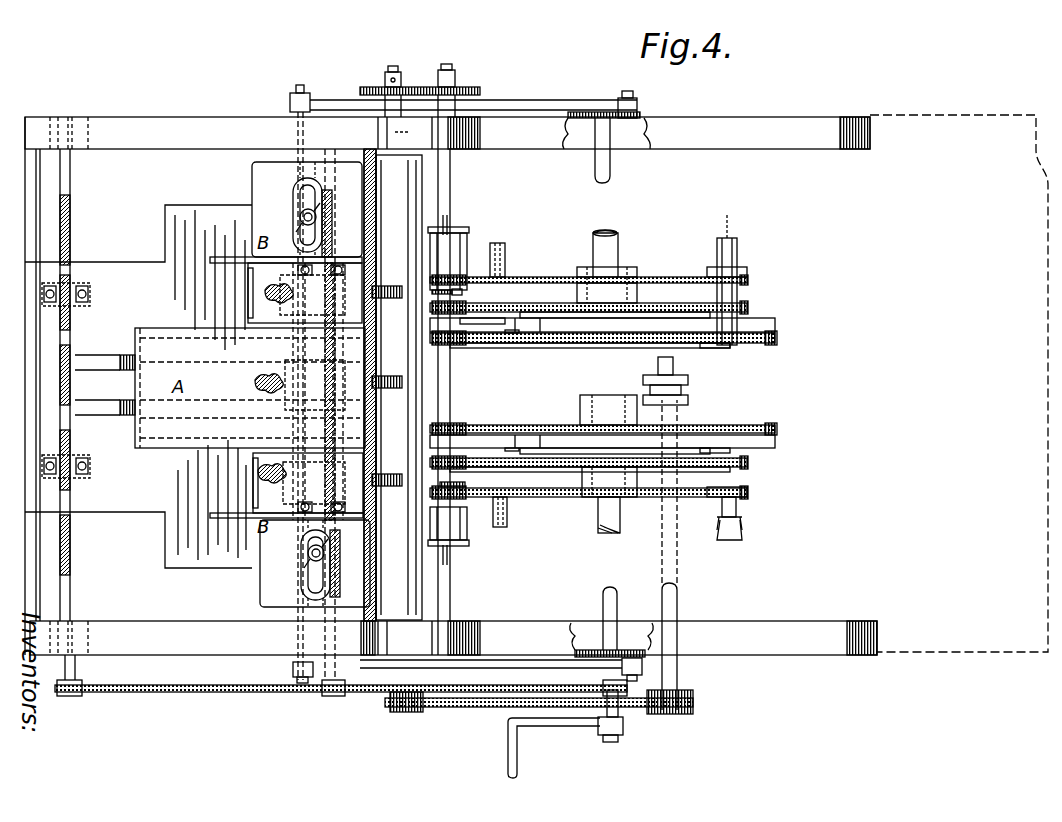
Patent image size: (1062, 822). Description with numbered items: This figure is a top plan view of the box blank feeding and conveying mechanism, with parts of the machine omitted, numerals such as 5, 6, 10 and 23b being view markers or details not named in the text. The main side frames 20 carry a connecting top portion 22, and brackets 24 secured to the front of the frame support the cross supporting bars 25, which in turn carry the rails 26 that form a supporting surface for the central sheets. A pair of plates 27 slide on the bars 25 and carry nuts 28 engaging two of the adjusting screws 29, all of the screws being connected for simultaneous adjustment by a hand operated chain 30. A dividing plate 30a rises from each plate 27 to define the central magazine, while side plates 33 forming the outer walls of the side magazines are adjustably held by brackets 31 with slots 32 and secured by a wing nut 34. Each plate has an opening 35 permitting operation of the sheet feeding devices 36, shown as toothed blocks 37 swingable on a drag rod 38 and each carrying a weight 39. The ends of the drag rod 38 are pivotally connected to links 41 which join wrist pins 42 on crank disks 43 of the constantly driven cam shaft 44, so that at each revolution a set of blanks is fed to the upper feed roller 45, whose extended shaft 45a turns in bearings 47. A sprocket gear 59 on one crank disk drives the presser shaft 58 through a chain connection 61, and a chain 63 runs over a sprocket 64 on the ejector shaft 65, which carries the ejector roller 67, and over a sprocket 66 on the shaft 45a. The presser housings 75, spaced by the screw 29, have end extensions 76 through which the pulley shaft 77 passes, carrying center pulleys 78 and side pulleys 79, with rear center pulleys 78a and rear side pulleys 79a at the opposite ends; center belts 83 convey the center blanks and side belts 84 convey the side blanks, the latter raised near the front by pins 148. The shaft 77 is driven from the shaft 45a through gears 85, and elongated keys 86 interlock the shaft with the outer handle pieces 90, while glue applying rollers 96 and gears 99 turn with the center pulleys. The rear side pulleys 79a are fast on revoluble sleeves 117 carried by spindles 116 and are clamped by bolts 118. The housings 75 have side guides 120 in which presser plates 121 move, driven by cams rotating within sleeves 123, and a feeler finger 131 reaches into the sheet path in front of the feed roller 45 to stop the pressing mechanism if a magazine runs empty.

The frame post 5 is at (25, 221).
The section indicator 6 is at (432, 203).
The section indicator 10 is at (722, 225).
The main side frames 20 is at (689, 154).
The connecting top portion 22 is at (703, 125).
The slide guide 23b is at (382, 411).
The brackets 24 is at (173, 149).
The cross supporting bars 25 is at (368, 150).
The rails 26 is at (96, 410).
The plates 27 is at (165, 230).
The nuts 28 is at (42, 300).
The adjusting screws 29 is at (70, 236).
The hand operated chain 30 is at (165, 693).
The dividing plate 30a is at (250, 387).
The brackets 31 is at (296, 204).
The slots 32 is at (305, 187).
The side plates 33 is at (286, 385).
The wing nut 34 is at (300, 222).
The slot or opening 35 is at (248, 275).
The sheet feeding devices 36 is at (233, 494).
The toothed blocks 37 is at (300, 290).
The drag rod 38 is at (295, 94).
The weight 39 is at (248, 293).
The links 41 is at (538, 102).
The wrist pins 42 is at (630, 104).
The crank disks 43 is at (582, 118).
The cam shaft 44 is at (611, 168).
The upper feed roller 45 is at (396, 572).
The feed roller shaft 45a is at (393, 70).
The bearings 47 is at (395, 640).
The presser shaft 58 is at (618, 243).
The sprocket gear 59 is at (612, 640).
The chain connection 61 is at (630, 658).
The chain or belt 63 is at (693, 706).
The sprocket 64 is at (690, 698).
The ejector shaft 65 is at (662, 408).
The sprocket 66 is at (422, 712).
The ejector roller 67 is at (688, 400).
The presser housings 75 is at (693, 300).
The end extensions 76 is at (440, 325).
The pulley shaft 77 is at (452, 213).
The center pulleys 78 is at (430, 340).
The rear center pulleys 78a is at (777, 338).
The side pulleys 79 is at (430, 280).
The rear side pulleys 79a is at (748, 280).
The center belts 83 is at (722, 348).
The side belts 84 is at (540, 282).
The gears 85 is at (447, 75).
The elongated keys 86 is at (455, 296).
The outer sleeves or handle pieces 90 is at (467, 253).
The glue applying rollers 96 is at (508, 344).
The gears 99 is at (470, 350).
The spindles 116 is at (733, 536).
The revoluble sleeves 117 is at (738, 248).
The clamping bolts 118 is at (745, 270).
The side guides 120 is at (673, 365).
The presser plates 121 is at (570, 330).
The sleeves 123 is at (590, 275).
The feeler or finger 131 is at (394, 391).
The rollers or pins 148 is at (505, 258).